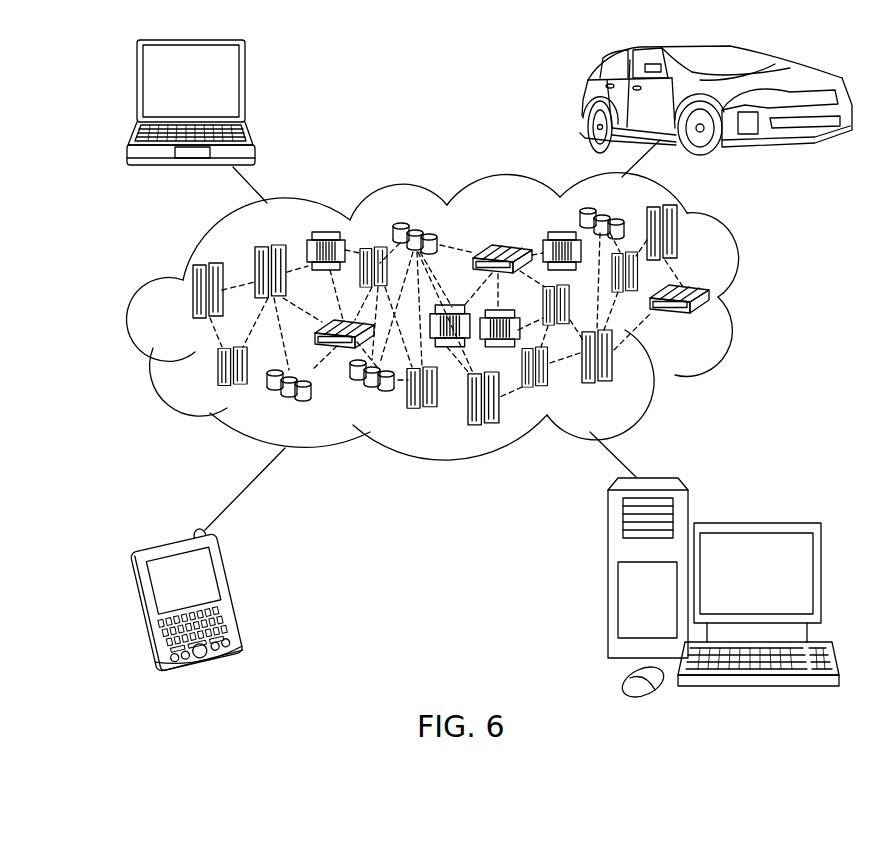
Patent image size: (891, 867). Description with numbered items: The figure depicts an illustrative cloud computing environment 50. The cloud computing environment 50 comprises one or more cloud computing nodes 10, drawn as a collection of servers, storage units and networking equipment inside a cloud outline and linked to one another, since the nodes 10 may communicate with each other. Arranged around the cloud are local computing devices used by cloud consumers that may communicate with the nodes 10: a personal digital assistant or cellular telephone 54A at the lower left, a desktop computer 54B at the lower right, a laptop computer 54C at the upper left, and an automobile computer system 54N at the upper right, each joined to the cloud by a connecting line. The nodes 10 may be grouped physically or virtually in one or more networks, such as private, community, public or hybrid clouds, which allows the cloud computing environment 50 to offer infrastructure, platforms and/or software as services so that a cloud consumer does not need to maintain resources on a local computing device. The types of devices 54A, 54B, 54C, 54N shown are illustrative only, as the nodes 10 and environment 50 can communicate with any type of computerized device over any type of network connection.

The cloud computing node 10 is at (712, 323).
The cloud computing environment 50 is at (755, 298).
The personal digital assistant or cellular telephone 54A is at (237, 596).
The desktop computer 54B is at (756, 523).
The laptop computer 54C is at (245, 86).
The automobile computer system 54N is at (583, 100).